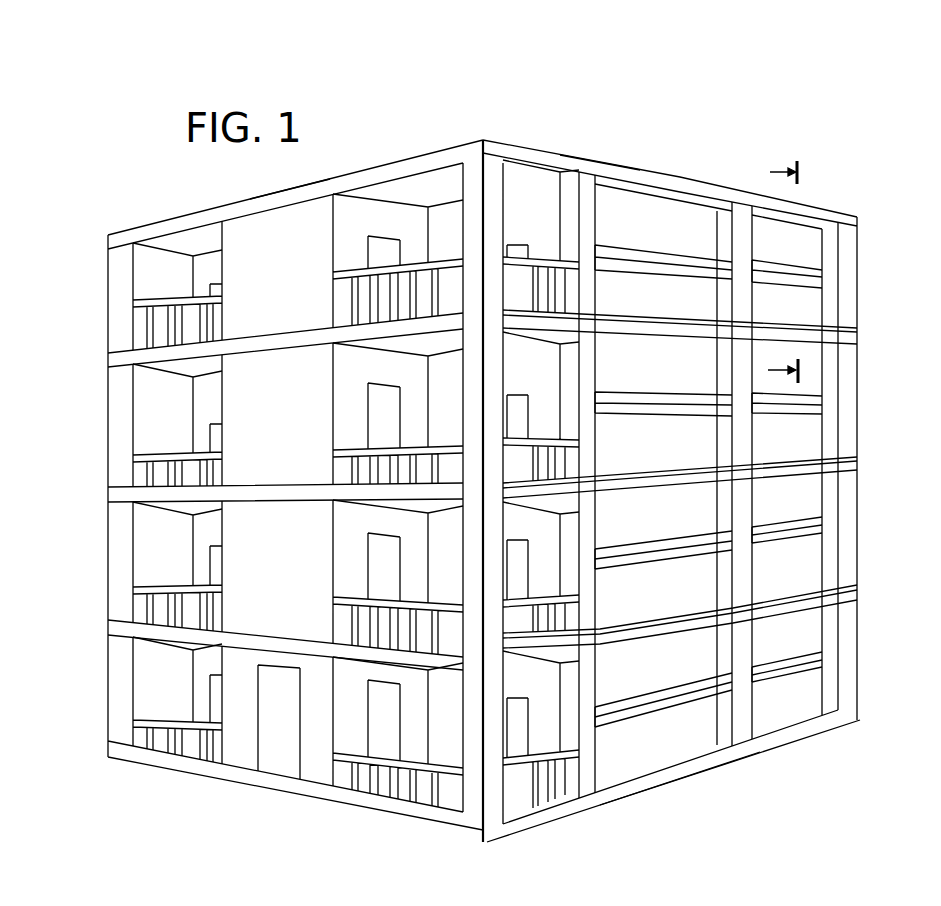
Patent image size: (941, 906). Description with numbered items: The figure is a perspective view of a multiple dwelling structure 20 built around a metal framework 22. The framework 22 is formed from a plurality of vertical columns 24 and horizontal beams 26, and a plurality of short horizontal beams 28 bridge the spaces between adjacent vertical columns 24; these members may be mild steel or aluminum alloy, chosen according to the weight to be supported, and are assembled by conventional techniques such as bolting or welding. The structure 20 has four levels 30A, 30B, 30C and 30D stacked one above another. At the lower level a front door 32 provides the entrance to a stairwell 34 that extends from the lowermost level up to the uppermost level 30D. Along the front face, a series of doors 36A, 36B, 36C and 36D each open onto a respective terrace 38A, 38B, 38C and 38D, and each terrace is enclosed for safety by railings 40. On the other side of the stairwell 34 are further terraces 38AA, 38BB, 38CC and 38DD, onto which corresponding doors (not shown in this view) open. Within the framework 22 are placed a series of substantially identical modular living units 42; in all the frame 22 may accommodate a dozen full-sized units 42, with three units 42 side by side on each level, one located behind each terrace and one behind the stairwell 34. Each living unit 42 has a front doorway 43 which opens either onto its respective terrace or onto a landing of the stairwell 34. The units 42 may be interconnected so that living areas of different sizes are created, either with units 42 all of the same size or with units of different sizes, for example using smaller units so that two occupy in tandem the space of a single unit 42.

The multiple dwelling structure 20 is at (708, 800).
The metal framework 22 is at (641, 171).
The vertical columns 24 is at (737, 222).
The horizontal beams 26 is at (770, 745).
The short horizontal beams 28 is at (830, 657).
The level 30A is at (108, 665).
The level 30B is at (108, 560).
The level 30C is at (108, 440).
The level 30D is at (108, 303).
The front door 32 is at (283, 768).
The stairwell 34 is at (352, 173).
The door 36A is at (373, 690).
The door 36B is at (380, 535).
The door 36C is at (378, 393).
The door 36D is at (398, 226).
The terrace 38A is at (443, 752).
The terrace 38B is at (436, 540).
The terrace 38C is at (436, 385).
The terrace 38D is at (460, 247).
The terrace 38AA is at (190, 685).
The terrace 38BB is at (190, 567).
The terrace 38CC is at (190, 428).
The terrace 38DD is at (190, 288).
The railings 40 is at (547, 800).
The modular living units 42 is at (812, 250).
The front doorway 43 is at (213, 284).